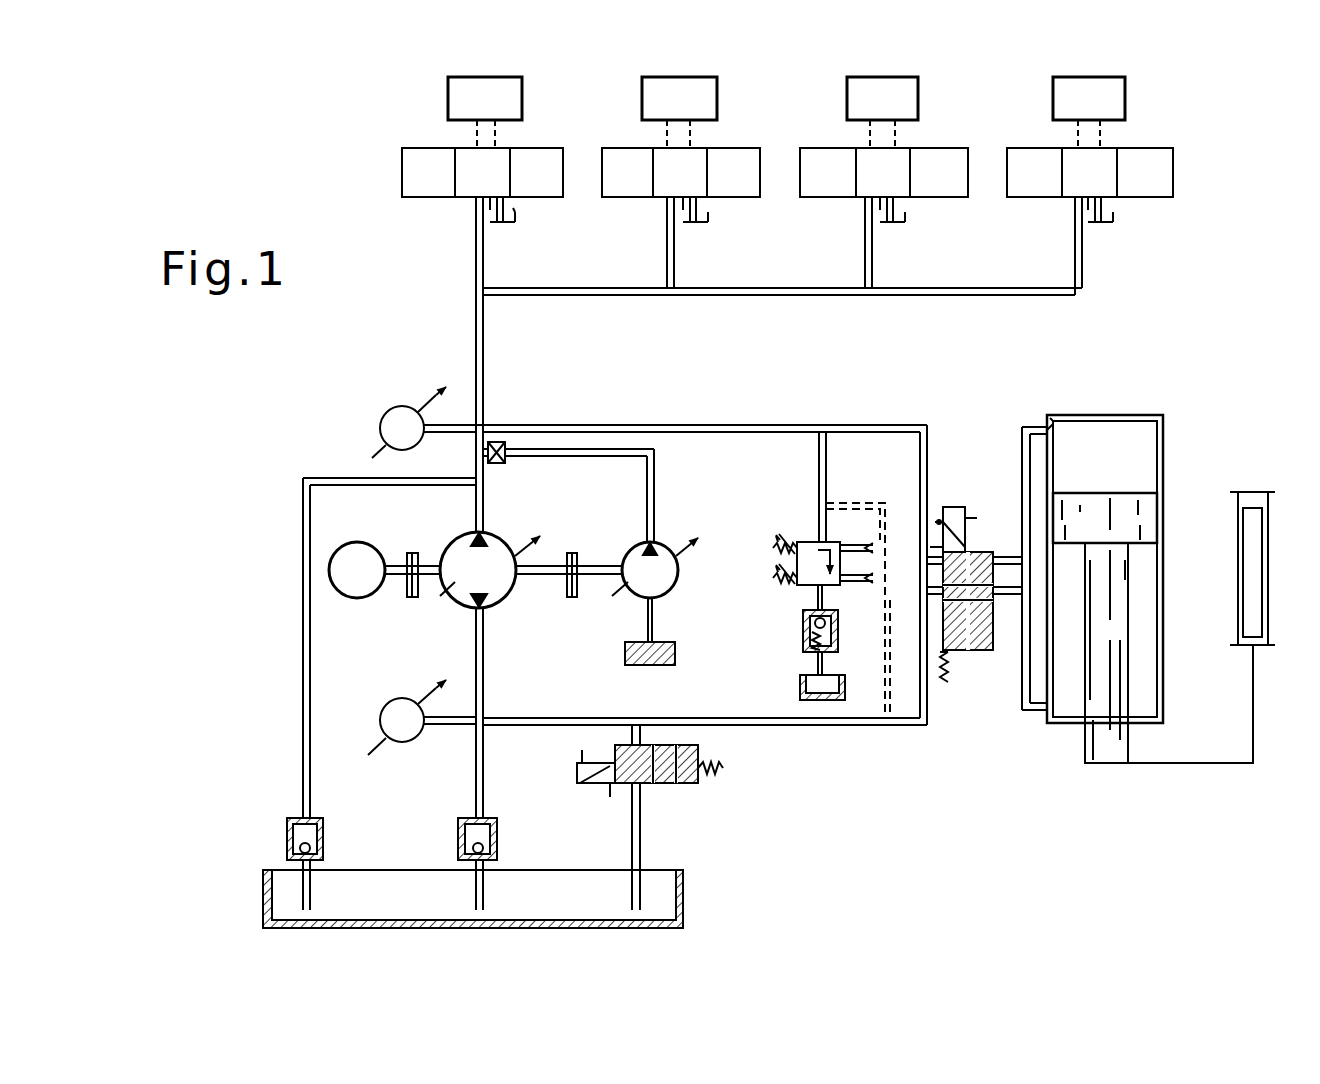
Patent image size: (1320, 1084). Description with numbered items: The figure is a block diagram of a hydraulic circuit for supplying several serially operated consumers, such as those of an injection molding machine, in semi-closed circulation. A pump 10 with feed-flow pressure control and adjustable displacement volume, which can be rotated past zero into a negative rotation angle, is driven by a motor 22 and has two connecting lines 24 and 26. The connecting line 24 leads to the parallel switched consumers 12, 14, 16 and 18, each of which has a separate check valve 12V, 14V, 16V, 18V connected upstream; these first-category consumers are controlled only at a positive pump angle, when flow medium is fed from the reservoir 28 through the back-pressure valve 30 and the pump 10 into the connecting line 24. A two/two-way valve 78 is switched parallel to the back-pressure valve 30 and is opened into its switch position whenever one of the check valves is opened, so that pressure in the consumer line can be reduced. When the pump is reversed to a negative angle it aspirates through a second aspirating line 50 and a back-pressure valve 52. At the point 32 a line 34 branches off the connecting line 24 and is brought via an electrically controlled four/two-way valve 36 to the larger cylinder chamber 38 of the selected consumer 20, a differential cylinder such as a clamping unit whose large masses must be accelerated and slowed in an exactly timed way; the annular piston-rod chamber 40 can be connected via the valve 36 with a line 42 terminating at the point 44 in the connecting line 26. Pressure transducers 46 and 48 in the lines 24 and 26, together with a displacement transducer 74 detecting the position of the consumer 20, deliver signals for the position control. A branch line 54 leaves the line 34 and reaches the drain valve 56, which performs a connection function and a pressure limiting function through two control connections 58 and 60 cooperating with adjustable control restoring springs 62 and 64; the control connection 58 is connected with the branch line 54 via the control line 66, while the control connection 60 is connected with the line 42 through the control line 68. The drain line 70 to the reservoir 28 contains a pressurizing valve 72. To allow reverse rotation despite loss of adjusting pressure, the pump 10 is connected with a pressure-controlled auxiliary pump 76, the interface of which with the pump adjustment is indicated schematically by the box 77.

The pump 10 is at (440, 548).
The consumer 12 is at (462, 97).
The consumer 14 is at (656, 97).
The consumer 16 is at (864, 97).
The consumer 18 is at (1070, 97).
The check valve 12V is at (448, 198).
The check valve 14V is at (640, 155).
The check valve 16V is at (840, 155).
The check valve 18V is at (1045, 160).
The consumer 20 is at (1136, 563).
The motor 22 is at (329, 570).
The connecting line 24 is at (476, 339).
The connecting line 26 is at (476, 648).
The reservoir 28 is at (381, 890).
The back-pressure valve 30 is at (497, 840).
The point 32 is at (487, 418).
The line 34 is at (732, 425).
The 4/2-way valve 36 is at (993, 540).
The cylinder chamber 38 is at (1085, 450).
The cylinder chamber 40 is at (1135, 692).
The line 42 is at (792, 725).
The point 44 is at (474, 728).
The pressure transducer 46 is at (392, 408).
The pressure transducer 48 is at (383, 710).
The second aspirating line 50 is at (303, 633).
The back-pressure valve 52 is at (286, 835).
The branch line 54 is at (826, 455).
The drain valve 56 is at (805, 540).
The control connection 58 is at (857, 545).
The control connection 60 is at (855, 585).
The control restoring spring 62 is at (777, 540).
The control restoring spring 64 is at (790, 582).
The control line 66 is at (885, 532).
The control connection 68 is at (890, 700).
The drain line 70 is at (808, 620).
The pressurizing valve 72 is at (802, 672).
The displacement transducer 74 is at (1273, 630).
The auxiliary pump 76 is at (665, 540).
The box 77 is at (506, 442).
The drain valve 78 is at (698, 783).